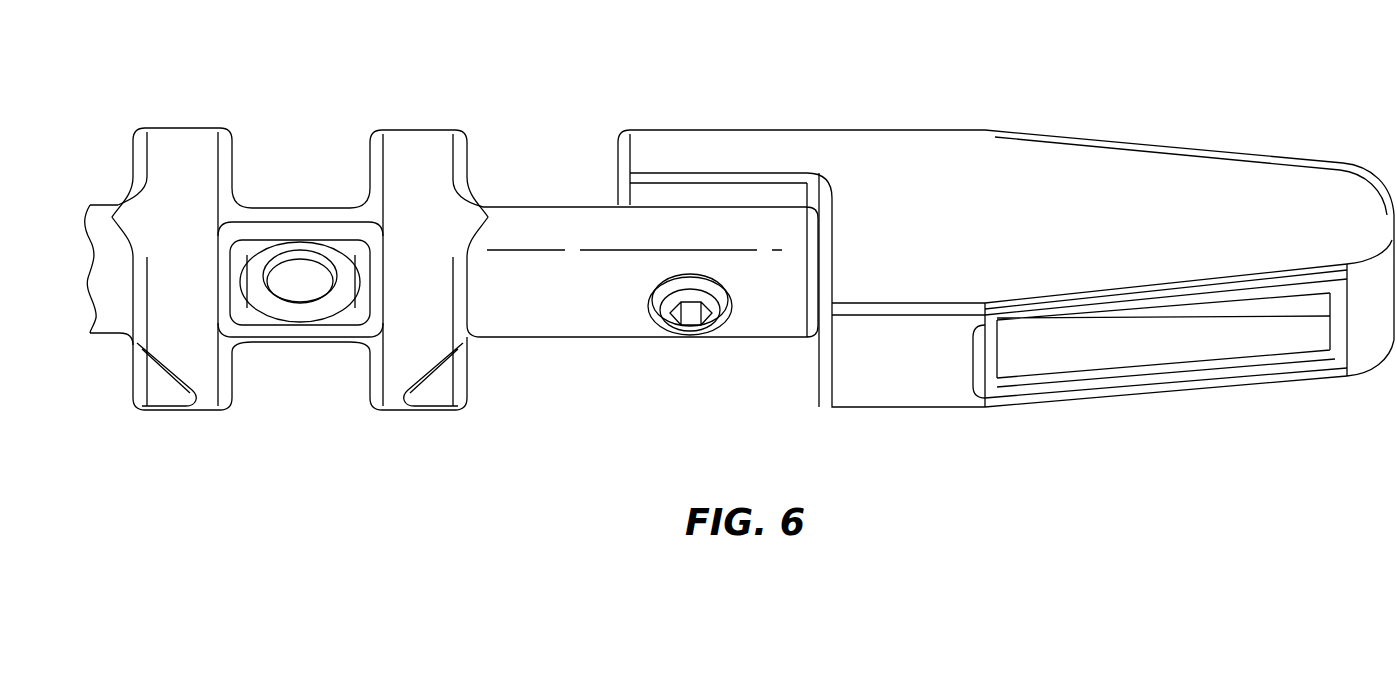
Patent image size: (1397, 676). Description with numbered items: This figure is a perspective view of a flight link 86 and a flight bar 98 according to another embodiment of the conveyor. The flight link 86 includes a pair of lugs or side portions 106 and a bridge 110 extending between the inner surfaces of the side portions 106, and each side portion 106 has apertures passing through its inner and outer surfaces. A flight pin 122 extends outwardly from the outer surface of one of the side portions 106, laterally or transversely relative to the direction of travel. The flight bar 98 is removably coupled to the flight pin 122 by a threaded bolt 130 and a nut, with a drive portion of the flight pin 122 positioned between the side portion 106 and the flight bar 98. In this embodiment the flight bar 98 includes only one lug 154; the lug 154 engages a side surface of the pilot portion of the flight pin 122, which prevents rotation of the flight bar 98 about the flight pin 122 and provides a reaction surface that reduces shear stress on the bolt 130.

The flight link 86 is at (313, 273).
The flight bar 98 is at (1006, 231).
The side portion 106 is at (393, 387).
The bridge 110 is at (330, 215).
The flight pin 122 is at (649, 305).
The bolt 130 is at (676, 341).
The lug 154 is at (703, 163).